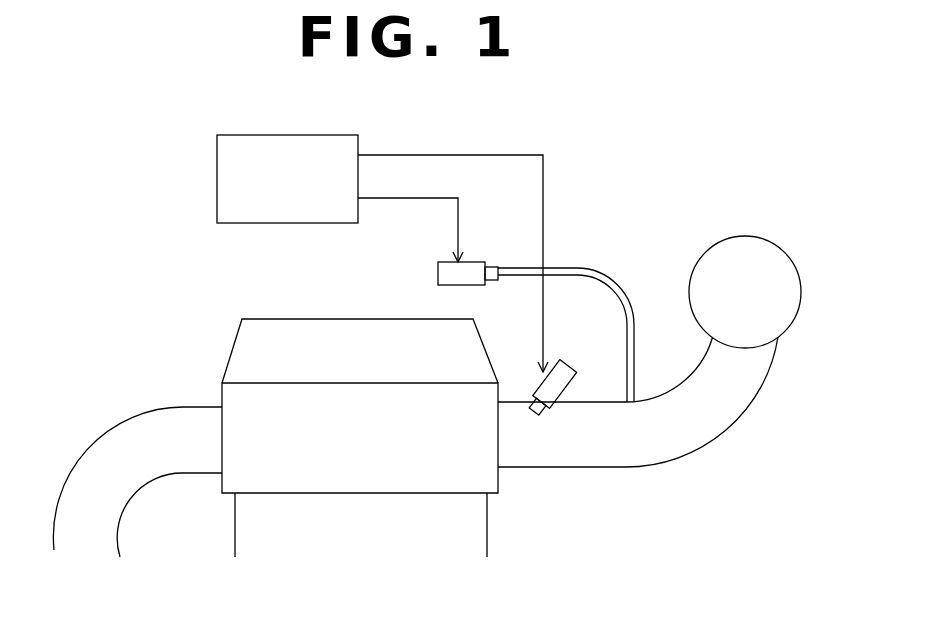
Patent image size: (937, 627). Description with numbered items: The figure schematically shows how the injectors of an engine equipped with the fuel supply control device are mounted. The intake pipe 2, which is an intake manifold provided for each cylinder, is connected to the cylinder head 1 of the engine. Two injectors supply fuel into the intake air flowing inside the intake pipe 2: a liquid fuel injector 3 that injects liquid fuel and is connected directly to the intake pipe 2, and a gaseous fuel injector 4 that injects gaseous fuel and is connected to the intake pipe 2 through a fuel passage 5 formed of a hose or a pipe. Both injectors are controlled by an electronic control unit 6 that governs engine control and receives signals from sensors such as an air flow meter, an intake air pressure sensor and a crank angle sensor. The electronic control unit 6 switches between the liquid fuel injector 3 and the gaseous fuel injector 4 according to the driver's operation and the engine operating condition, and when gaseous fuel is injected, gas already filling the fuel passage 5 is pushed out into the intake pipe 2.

The cylinder head 1 is at (216, 418).
The intake pipe 2 is at (585, 467).
The liquid fuel injector 3 is at (575, 380).
The gaseous fuel injector 4 is at (437, 270).
The fuel passage 5 is at (638, 357).
The electronic control unit 6 is at (214, 178).